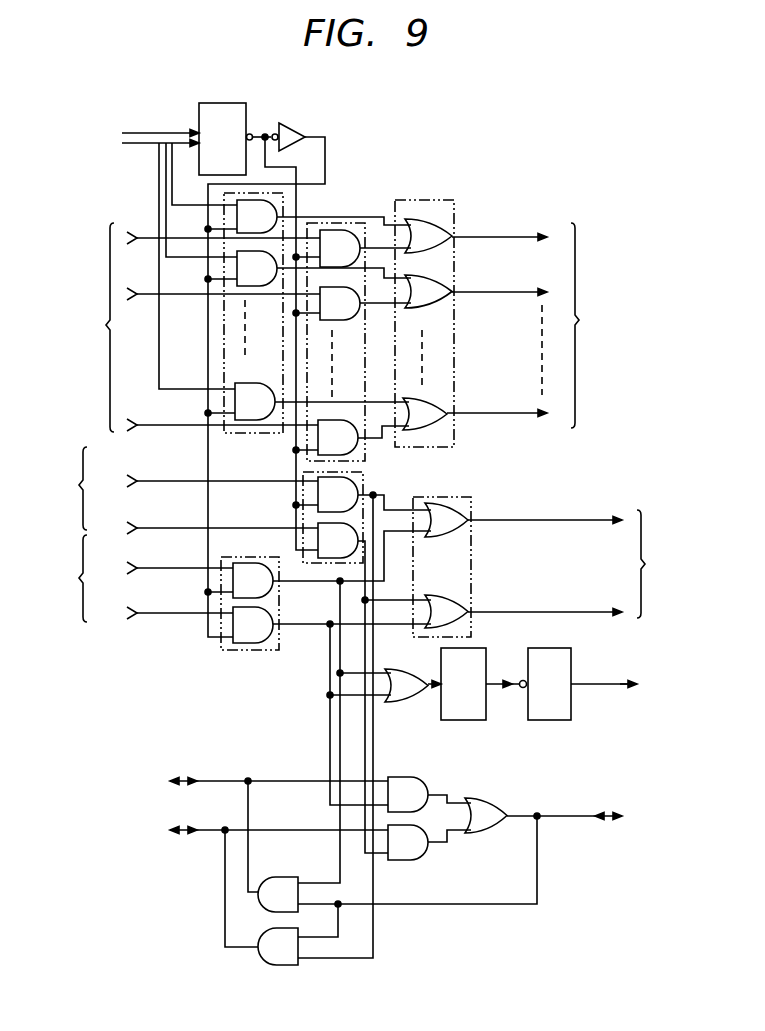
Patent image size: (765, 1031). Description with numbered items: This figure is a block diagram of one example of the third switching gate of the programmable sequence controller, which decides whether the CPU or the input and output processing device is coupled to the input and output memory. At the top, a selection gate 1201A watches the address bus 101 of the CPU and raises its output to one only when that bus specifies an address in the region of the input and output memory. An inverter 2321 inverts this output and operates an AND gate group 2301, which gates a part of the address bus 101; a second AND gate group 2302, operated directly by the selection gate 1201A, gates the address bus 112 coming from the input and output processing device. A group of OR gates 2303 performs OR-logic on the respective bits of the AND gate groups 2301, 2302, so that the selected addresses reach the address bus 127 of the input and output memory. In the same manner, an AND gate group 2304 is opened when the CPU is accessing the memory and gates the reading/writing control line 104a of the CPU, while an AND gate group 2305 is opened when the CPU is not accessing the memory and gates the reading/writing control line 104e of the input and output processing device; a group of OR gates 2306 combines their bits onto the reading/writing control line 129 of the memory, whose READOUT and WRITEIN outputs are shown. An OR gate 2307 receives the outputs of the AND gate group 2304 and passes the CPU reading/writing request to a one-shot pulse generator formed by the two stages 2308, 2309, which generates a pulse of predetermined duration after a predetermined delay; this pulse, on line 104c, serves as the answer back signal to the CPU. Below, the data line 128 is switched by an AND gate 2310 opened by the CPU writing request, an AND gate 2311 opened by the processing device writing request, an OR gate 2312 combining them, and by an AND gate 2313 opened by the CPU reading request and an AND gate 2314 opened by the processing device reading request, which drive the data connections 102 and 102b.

The selection gate 1201A is at (232, 103).
The address bus 101 is at (141, 137).
The inverter 2321 is at (300, 131).
The AND gate group 2301 is at (285, 196).
The AND gate group 2302 is at (311, 222).
The OR gate group 2303 is at (456, 222).
The address bus 112 is at (196, 327).
The address bus 127 is at (594, 325).
The reading/writing control line 104e is at (170, 490).
The reading/writing control line 104a is at (123, 578).
The AND gate group 2304 is at (250, 557).
The AND gate group 2305 is at (365, 476).
The OR gate group 2306 is at (440, 496).
The reading/writing control line 129 is at (597, 554).
The OR gate 2307 is at (417, 664).
The one-shot pulse generator 2308 is at (482, 658).
The one-shot pulse generator 2309 is at (596, 643).
The control output 104c is at (655, 686).
The data bus 102 is at (257, 831).
The data bus b 102b is at (251, 882).
The AND gate 2310 is at (420, 780).
The AND gate 2311 is at (410, 857).
The OR gate 2312 is at (498, 808).
The AND gate 2313 is at (280, 880).
The AND gate 2314 is at (285, 965).
The data line 128 is at (630, 818).